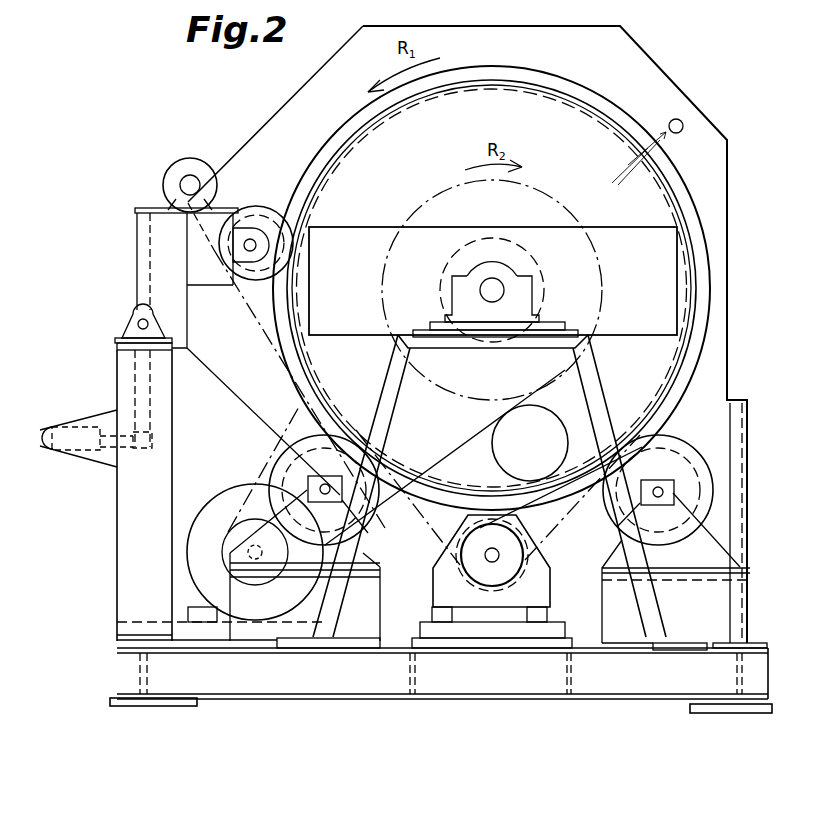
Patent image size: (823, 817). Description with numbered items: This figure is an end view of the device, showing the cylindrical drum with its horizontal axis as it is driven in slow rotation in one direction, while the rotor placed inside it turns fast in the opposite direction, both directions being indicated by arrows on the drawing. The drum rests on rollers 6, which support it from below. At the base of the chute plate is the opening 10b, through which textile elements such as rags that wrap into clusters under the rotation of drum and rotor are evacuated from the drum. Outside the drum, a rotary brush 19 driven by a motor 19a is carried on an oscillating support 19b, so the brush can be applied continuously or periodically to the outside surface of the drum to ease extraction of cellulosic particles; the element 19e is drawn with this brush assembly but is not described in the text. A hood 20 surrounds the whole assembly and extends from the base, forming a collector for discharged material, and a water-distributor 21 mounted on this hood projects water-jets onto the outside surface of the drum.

The rollers 6 is at (297, 467).
The opening 10b is at (512, 437).
The rotary brush 19 is at (254, 207).
The motor 19a is at (185, 160).
The oscillating support 19b is at (188, 228).
The hydraulic actuator 19e is at (68, 432).
The hood 20 is at (660, 82).
The water-distributor 21 is at (683, 122).